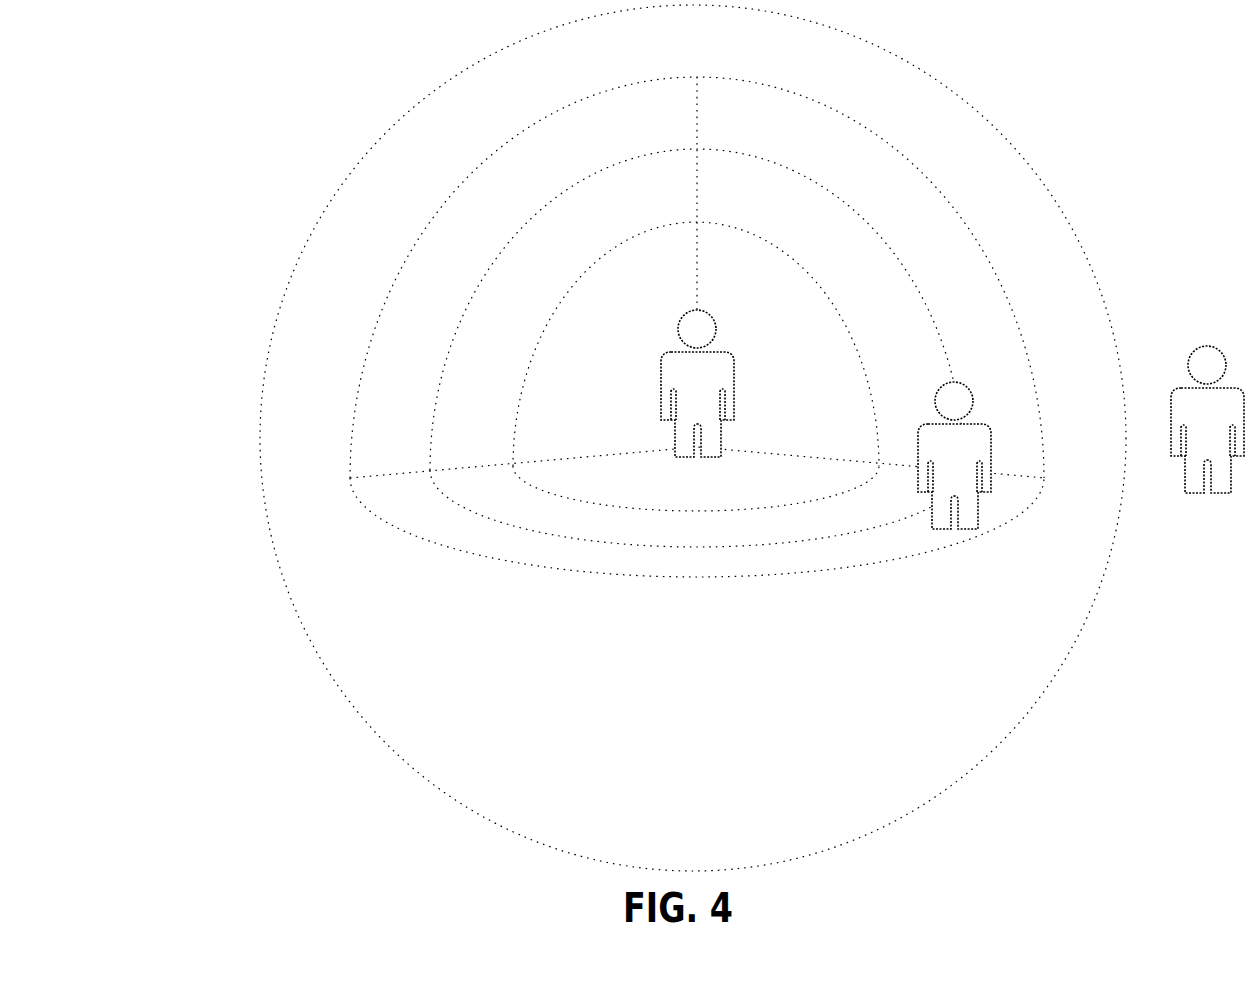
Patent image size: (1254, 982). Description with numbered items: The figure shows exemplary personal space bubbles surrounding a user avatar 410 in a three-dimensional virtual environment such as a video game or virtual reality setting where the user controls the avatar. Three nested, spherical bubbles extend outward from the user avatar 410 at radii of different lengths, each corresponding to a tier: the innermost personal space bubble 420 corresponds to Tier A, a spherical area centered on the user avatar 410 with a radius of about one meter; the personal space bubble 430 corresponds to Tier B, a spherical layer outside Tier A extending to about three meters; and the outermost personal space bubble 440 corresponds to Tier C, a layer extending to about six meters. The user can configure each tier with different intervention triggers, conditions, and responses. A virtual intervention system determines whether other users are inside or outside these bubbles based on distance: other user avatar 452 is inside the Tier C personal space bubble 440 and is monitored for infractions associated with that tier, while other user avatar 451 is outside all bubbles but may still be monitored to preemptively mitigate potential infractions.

The personal space bubble 440 is at (462, 168).
The personal space bubble 430 is at (491, 241).
The personal space bubble 420 is at (530, 329).
The user avatar 410 is at (697, 383).
The other user avatar 452 is at (954, 455).
The other user avatar 451 is at (1207, 419).